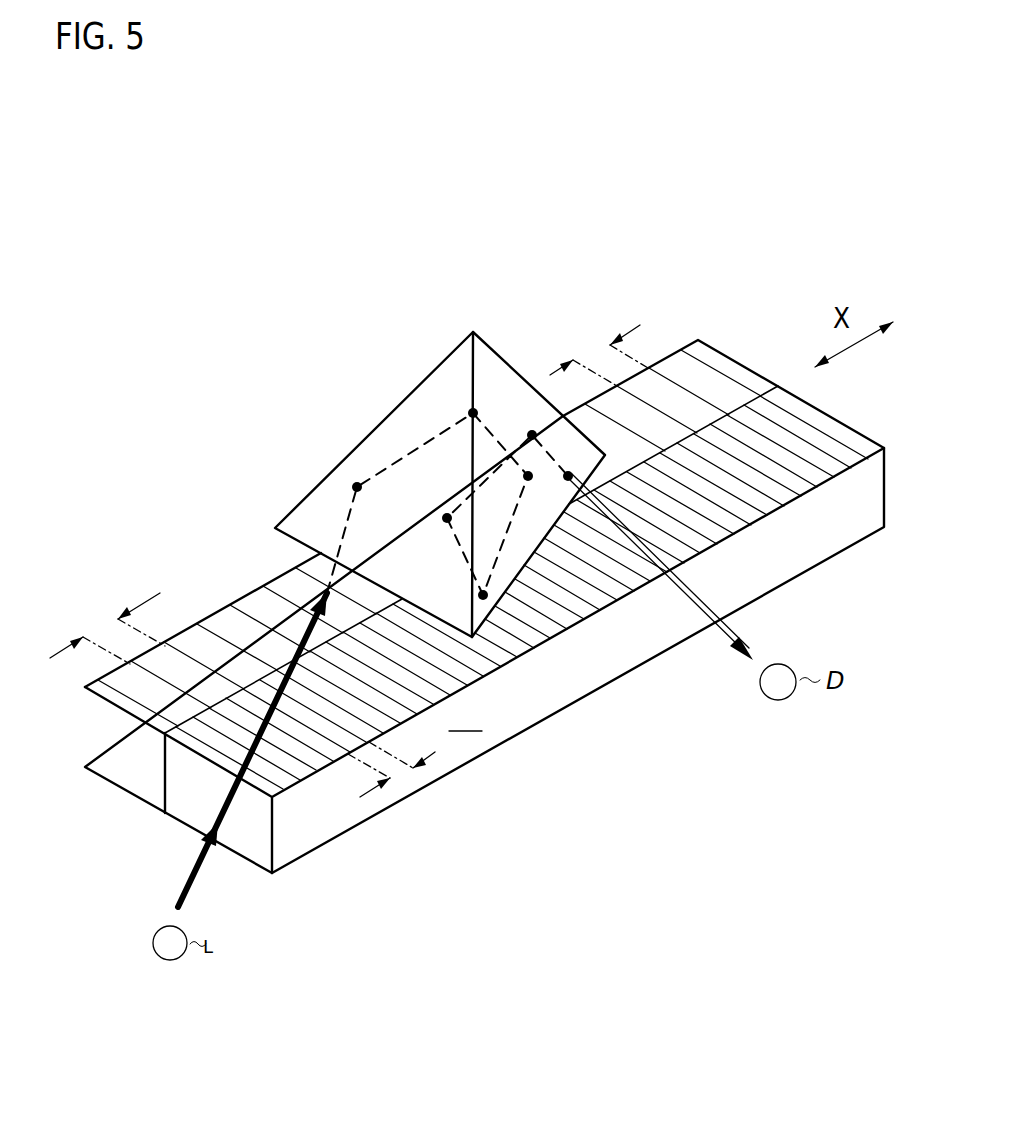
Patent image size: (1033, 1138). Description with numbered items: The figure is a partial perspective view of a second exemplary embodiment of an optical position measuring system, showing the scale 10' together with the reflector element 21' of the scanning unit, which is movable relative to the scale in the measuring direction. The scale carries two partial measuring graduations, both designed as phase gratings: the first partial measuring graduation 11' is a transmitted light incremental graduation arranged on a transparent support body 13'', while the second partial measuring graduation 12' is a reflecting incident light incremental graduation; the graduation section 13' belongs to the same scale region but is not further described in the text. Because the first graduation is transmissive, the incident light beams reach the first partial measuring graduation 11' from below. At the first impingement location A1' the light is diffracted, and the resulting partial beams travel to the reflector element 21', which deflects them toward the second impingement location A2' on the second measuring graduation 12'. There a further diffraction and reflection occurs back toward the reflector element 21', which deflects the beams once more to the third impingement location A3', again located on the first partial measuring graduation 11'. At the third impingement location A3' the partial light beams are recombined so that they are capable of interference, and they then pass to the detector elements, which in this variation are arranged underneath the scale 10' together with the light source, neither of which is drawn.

The scale 10' is at (484, 616).
The first partial measuring graduation 11' is at (474, 505).
The second partial measuring graduation 12' is at (534, 582).
The grating section with period d3 13' is at (703, 479).
The transparent support body 13'' is at (196, 710).
The reflector element 21' is at (440, 484).
The first impingement location A1' is at (337, 500).
The second impingement location A2' is at (542, 596).
The third impingement location A3' is at (658, 600).